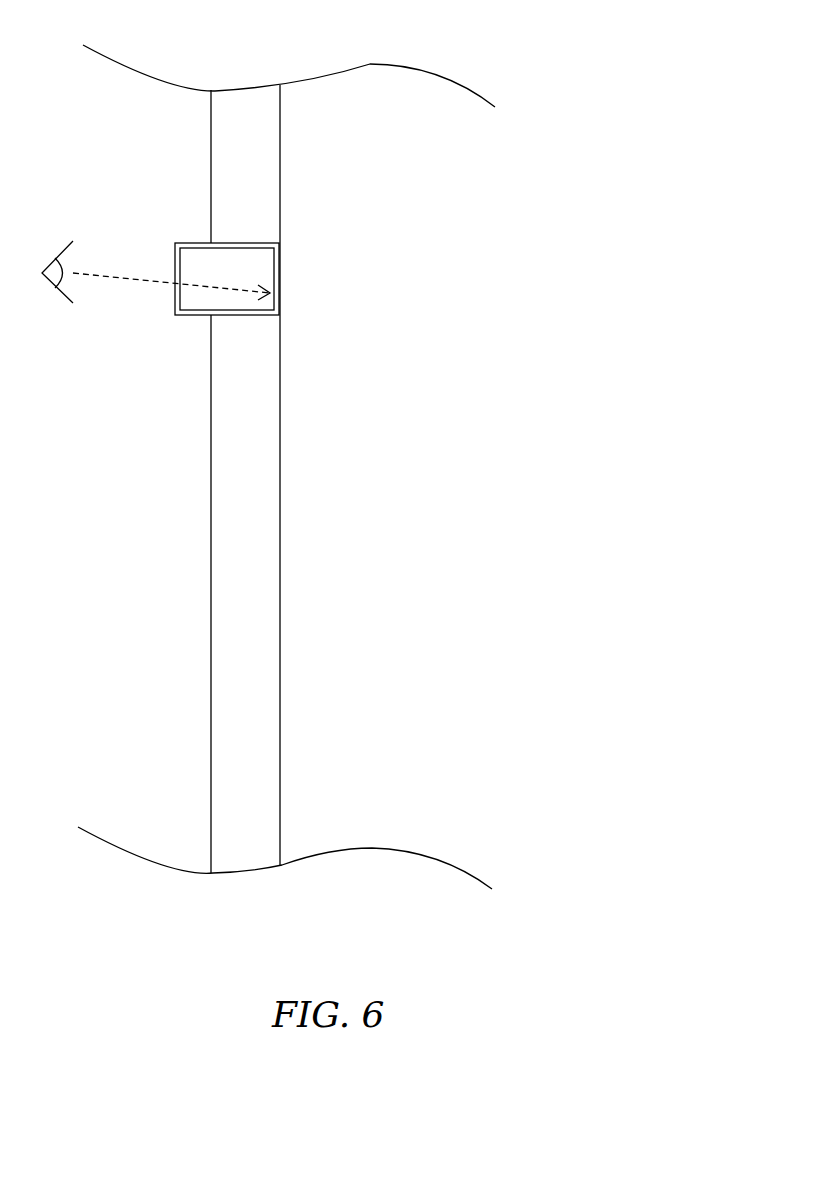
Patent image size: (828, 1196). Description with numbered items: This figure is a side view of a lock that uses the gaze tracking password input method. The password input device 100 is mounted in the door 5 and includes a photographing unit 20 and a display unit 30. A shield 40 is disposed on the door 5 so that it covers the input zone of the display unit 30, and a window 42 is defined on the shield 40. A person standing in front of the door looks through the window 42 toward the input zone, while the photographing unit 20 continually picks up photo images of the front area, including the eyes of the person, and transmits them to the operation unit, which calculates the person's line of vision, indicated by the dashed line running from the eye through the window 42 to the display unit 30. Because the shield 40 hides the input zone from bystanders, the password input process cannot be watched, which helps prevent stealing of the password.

The door 5 is at (253, 638).
The password input device 100 is at (251, 230).
The photographing unit 20 is at (280, 257).
The display unit 30 is at (282, 288).
The shield 40 is at (185, 243).
The window 42 is at (177, 282).